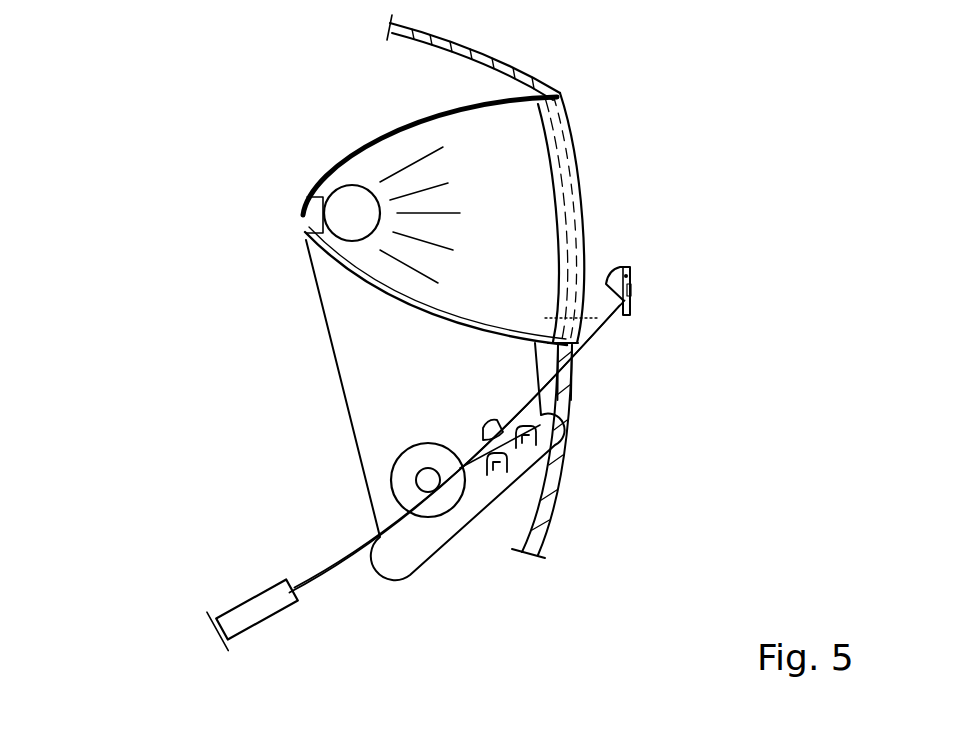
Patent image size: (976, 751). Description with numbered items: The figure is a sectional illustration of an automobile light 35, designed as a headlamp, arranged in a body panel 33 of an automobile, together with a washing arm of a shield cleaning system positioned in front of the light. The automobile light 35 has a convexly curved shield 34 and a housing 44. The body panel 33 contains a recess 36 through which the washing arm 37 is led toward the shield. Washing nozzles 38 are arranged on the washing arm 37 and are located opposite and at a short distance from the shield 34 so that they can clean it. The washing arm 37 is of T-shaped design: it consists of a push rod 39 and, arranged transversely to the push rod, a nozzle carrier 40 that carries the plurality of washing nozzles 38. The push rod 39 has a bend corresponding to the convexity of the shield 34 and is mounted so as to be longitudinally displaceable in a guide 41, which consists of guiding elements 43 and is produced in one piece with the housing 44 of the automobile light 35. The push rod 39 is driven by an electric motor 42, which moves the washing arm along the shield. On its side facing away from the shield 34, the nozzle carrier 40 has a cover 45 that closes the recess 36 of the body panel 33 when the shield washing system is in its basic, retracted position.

The body panel 33 is at (550, 487).
The shield 34 is at (565, 120).
The automobile light 35 is at (403, 120).
The recess 36 is at (573, 380).
The washing arm 37 is at (612, 335).
The washing nozzles 38 is at (597, 285).
The push rod 39 is at (337, 567).
The nozzle carrier 40 is at (632, 275).
The guide 41 is at (485, 422).
The electric motor 42 is at (405, 480).
The guiding elements 43 is at (503, 465).
The housing 44 is at (343, 268).
The cover 45 is at (633, 290).